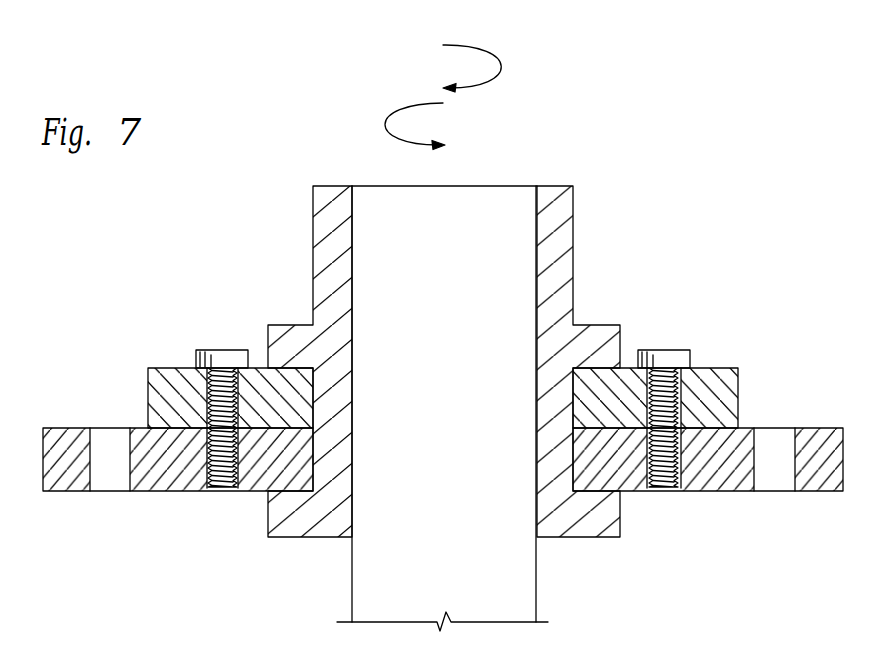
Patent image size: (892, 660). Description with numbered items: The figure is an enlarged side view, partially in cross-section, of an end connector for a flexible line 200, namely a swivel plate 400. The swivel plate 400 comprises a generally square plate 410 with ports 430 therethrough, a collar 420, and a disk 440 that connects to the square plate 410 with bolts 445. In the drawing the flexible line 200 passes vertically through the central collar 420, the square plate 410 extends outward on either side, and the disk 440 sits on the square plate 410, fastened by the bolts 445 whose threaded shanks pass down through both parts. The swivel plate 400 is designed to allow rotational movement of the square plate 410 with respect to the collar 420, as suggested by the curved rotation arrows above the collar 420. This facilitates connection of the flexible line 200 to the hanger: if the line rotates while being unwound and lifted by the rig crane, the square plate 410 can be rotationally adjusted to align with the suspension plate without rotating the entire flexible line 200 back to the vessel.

The flexible line 200 is at (537, 588).
The swivel plate 400 is at (716, 122).
The square plate 410 is at (59, 427).
The collar 420 is at (574, 237).
The ports 430 is at (110, 492).
The disk 440 is at (165, 367).
The bolts 445 is at (222, 349).